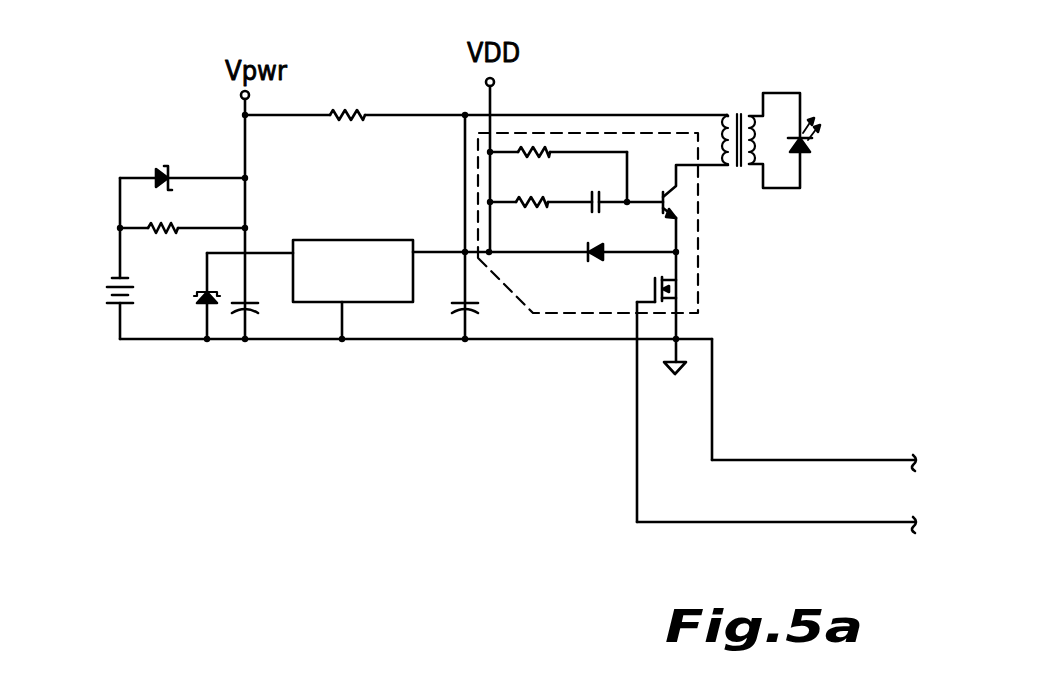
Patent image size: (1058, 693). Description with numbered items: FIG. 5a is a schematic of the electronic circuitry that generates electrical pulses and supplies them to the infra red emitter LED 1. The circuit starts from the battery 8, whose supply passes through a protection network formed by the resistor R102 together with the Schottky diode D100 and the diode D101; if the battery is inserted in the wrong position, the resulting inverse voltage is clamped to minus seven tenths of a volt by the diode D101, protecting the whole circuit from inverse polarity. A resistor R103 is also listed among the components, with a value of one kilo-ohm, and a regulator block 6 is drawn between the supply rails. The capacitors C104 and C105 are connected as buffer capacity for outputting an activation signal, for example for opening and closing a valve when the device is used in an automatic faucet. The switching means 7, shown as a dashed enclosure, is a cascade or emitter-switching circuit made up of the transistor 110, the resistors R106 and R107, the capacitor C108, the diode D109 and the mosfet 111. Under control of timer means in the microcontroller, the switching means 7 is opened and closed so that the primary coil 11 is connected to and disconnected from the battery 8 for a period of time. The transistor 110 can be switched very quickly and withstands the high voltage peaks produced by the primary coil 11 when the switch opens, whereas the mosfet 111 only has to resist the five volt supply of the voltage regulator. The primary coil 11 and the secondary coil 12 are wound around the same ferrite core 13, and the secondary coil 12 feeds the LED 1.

The LED 1 is at (812, 146).
The voltage regulator 6 is at (343, 357).
The switching means 7 is at (630, 236).
The battery 8 is at (105, 296).
The primary coil 11 is at (724, 140).
The secondary coil 12 is at (753, 140).
The ferrite core 13 is at (741, 140).
The transistor 110 is at (677, 190).
The mosfet 111 is at (668, 285).
The Schottky diode D100 is at (159, 171).
The diode D101 is at (205, 303).
The resistor R102 is at (170, 226).
The resistor R103 is at (337, 112).
The capacitor C104 is at (252, 312).
The capacitor C105 is at (472, 312).
The resistor R106 is at (519, 154).
The resistor R107 is at (516, 204).
The capacitor C108 is at (600, 206).
The diode D109 is at (588, 259).